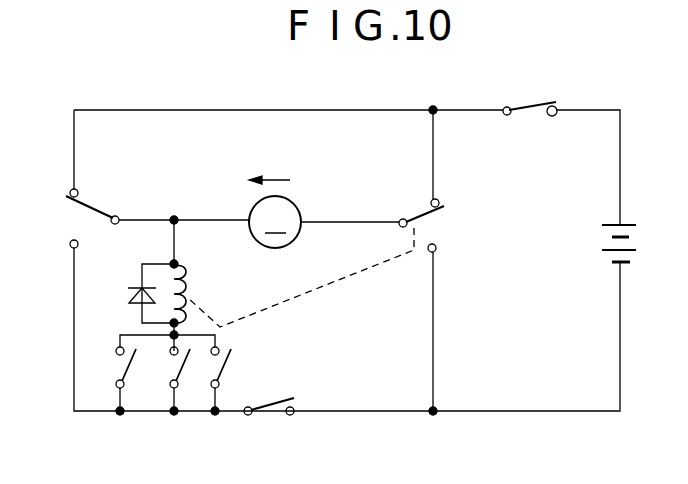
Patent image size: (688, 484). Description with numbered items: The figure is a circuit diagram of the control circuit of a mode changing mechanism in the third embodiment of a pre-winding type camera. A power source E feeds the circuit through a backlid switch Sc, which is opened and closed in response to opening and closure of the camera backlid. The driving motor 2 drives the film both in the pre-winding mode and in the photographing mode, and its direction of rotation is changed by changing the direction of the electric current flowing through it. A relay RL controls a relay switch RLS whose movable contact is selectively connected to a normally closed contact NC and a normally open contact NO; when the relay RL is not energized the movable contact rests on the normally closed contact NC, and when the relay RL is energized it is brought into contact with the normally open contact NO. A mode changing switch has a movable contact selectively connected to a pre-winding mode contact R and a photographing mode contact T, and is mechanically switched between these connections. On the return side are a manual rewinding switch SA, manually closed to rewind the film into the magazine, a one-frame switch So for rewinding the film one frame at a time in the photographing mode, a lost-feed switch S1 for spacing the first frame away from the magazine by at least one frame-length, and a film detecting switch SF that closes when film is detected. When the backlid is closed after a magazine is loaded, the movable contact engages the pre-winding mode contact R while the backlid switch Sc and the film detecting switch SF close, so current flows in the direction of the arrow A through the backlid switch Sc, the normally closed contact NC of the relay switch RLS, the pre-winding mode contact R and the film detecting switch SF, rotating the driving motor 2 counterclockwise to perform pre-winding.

The photographing mode contact T is at (146, 167).
The pre-winding mode contact R is at (61, 246).
The relay RL is at (141, 285).
The manual rewinding switch SA is at (131, 381).
The one-frame switch So is at (185, 381).
The lost-feed switch S1 is at (225, 381).
The film detecting switch SF is at (269, 424).
The driving motor 2 is at (324, 222).
The arrow A is at (283, 181).
The normally closed contact NC is at (449, 193).
The normally open contact NO is at (448, 259).
The relay switch RLS is at (341, 266).
The backlid switch Sc is at (530, 98).
The power source E is at (629, 243).